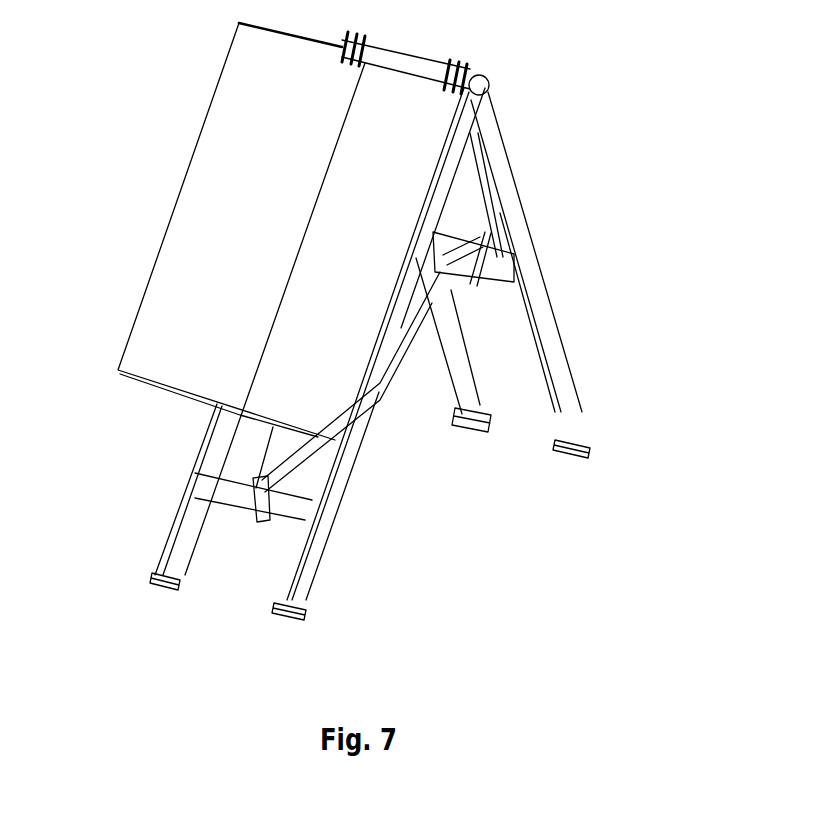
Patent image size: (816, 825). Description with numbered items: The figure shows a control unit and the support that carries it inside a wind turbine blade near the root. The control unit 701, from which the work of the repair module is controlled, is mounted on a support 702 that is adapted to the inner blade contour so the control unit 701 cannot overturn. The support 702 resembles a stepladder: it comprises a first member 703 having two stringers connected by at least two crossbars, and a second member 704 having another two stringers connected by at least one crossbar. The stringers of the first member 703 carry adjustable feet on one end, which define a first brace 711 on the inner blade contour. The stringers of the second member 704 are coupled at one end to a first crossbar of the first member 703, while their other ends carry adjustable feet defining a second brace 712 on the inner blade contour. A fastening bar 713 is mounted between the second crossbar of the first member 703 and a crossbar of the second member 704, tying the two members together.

The control unit 701 is at (198, 207).
The support 702 is at (528, 158).
The first member 703 is at (185, 482).
The second member 704 is at (550, 310).
The first brace 711 is at (160, 588).
The second brace 712 is at (481, 436).
The fastening bar 713 is at (400, 363).